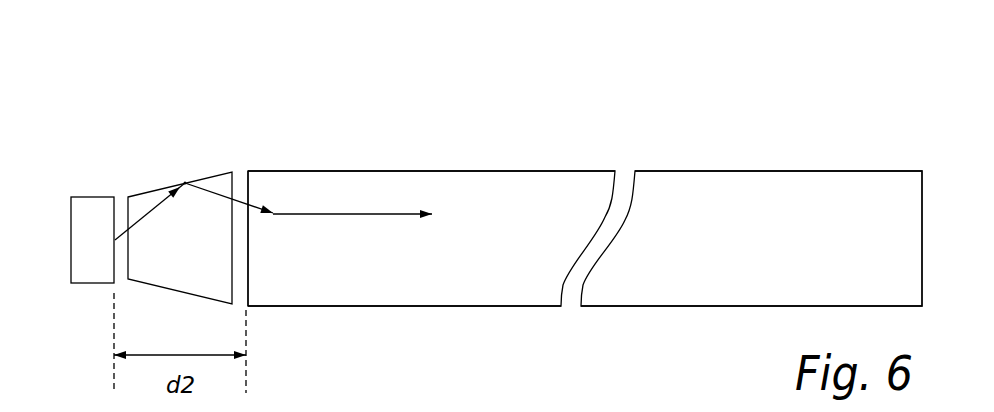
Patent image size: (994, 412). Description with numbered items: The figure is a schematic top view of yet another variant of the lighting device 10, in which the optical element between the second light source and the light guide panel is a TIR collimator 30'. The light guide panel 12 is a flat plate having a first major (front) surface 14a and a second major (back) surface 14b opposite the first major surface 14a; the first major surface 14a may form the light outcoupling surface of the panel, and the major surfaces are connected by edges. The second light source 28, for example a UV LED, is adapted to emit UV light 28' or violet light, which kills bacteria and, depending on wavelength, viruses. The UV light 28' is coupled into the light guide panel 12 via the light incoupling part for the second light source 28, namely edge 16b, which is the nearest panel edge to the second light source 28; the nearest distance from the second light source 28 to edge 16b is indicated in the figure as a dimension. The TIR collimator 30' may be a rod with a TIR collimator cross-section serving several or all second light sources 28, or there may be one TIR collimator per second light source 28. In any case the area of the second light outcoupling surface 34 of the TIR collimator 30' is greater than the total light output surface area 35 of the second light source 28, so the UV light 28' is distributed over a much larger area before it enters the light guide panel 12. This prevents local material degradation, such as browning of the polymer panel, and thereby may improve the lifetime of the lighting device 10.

The lighting device 10 is at (837, 140).
The light guide panel 12 is at (712, 188).
The first major surface 14a is at (457, 307).
The second major surface 14b is at (483, 188).
The edge 16b is at (247, 268).
The second light source 28 is at (70, 229).
The UV light 28' is at (267, 189).
The TIR collimator 30' is at (211, 148).
The second light outcoupling surface 34 is at (233, 210).
The total light output surface area 35 is at (116, 263).